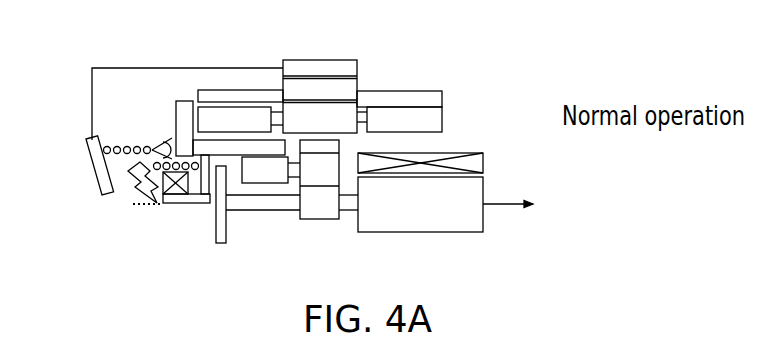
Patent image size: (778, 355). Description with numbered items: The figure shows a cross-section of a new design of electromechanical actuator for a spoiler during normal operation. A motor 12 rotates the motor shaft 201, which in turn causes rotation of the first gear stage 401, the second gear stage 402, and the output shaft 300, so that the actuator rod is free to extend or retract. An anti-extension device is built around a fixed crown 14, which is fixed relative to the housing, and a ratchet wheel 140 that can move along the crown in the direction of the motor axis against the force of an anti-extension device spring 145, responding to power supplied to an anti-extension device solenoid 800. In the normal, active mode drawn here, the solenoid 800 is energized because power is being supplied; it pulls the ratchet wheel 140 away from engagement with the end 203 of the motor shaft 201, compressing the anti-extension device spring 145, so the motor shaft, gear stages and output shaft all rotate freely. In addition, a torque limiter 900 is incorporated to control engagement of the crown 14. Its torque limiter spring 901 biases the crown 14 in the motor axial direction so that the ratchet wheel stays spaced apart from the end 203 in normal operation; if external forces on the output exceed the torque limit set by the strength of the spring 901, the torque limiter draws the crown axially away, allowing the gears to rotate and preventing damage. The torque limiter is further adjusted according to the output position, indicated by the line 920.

The line 920 is at (107, 68).
The fixed crown 14 is at (183, 100).
The output shaft 300 is at (327, 59).
The second gear stage 402 is at (428, 107).
The first gear stage 401 is at (322, 168).
The motor 12 is at (455, 215).
The motor shaft 201 is at (257, 204).
The end of the motor shaft 203 is at (220, 227).
The ratchet wheel 140 is at (173, 198).
The anti-extension device spring 145 is at (142, 183).
The anti-extension device solenoid 800 is at (142, 198).
The torque limiter 900 is at (90, 167).
The torque limiter spring 901 is at (113, 142).